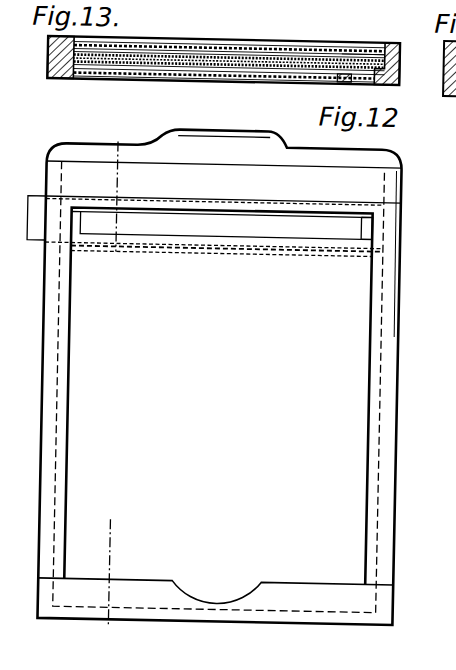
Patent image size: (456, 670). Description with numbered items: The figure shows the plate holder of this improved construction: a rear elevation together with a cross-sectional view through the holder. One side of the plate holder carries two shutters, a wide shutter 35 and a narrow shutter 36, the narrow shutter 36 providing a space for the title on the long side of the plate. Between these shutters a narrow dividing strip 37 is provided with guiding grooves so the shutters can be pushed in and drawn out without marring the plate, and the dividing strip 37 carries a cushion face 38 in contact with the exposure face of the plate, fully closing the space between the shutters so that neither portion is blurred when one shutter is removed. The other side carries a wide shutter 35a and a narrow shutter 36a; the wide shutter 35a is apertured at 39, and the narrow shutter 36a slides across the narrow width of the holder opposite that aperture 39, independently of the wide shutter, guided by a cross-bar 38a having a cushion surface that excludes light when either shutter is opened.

In FIG. 13, the shutter 35 is at (220, 82).
In FIG. 13, the shutter 36 is at (376, 80).
In FIG. 13, the dividing strip 37 is at (340, 72).
In FIG. 13, the cushion face 38 is at (338, 66).
In FIG. 12, the shutter 35a is at (210, 384).
In FIG. 12, the shutter 36a is at (234, 224).
In FIG. 12, the cross-bar 38a is at (314, 252).
In FIG. 12, the aperture 39 is at (356, 224).